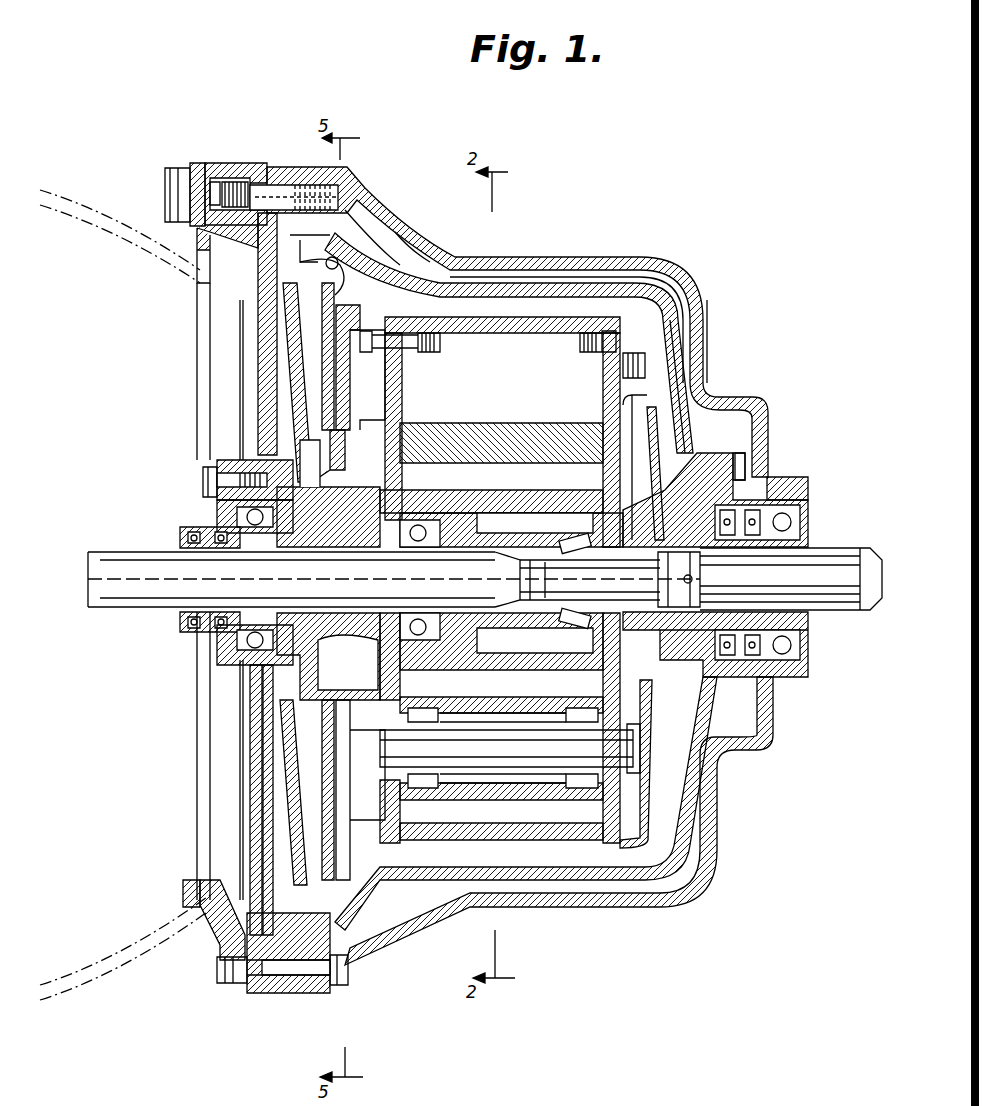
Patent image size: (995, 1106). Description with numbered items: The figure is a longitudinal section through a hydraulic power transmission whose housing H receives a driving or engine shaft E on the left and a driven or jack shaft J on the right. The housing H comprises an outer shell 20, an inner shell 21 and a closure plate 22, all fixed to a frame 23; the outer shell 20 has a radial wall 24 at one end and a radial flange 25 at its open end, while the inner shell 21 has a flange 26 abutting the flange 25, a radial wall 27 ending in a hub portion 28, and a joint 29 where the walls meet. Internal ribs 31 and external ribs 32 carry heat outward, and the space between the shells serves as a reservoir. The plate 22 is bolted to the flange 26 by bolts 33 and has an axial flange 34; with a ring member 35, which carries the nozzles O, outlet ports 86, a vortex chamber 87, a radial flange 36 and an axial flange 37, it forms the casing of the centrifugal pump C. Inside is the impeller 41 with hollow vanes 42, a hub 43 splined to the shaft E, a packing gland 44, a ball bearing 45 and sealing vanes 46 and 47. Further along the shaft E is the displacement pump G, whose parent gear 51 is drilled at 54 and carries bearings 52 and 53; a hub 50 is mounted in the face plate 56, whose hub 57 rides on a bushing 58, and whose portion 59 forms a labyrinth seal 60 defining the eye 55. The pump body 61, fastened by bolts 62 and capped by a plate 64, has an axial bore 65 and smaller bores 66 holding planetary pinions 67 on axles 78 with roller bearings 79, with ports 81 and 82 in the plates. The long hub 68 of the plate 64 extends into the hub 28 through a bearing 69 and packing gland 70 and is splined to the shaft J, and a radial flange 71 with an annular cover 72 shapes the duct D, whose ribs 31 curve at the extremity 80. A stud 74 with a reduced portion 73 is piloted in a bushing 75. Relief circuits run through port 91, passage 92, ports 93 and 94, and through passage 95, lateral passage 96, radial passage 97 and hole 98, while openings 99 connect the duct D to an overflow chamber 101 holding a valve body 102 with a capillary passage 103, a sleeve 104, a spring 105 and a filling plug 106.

The outer shell 20 is at (597, 256).
The inner shell 21 is at (627, 282).
The closure plate 22 is at (255, 345).
The frame 23 is at (197, 895).
The radial wall 24 is at (720, 352).
The radial flange 25 is at (345, 990).
The radial flange 26 is at (310, 995).
The radial wall 27 is at (688, 333).
The hub portion 28 is at (773, 693).
The joint of walls 29 is at (775, 712).
The internal ribs 31 is at (455, 302).
The external ribs 32 is at (497, 278).
The bolts 33 is at (285, 990).
The circular flange 34 is at (267, 282).
The ring member 35 is at (392, 228).
The radial flange 36 is at (357, 780).
The axial flange 37 is at (395, 935).
The centrifugal impeller 41 is at (283, 372).
The hollow arms or vanes 42 is at (316, 404).
The central hub 43 is at (247, 648).
The packing gland 44 is at (233, 632).
The ball bearing 45 is at (237, 520).
The ribs or vanes 46 is at (277, 393).
The ribs or vanes 47 is at (330, 393).
The hub portion 50 is at (370, 545).
The parent gear 51 is at (497, 503).
The bearing 52 is at (369, 684).
The roller bearing 53 is at (588, 543).
The drilling 54 is at (501, 641).
The eye 55 is at (253, 453).
The face plate 56 is at (405, 400).
The hub 57 is at (355, 645).
The bushing 58 is at (328, 678).
The laterally extending portion 59 is at (338, 456).
The labyrinth seal 60 is at (330, 710).
The cylindrical body 61 is at (517, 323).
The bolts 62 is at (437, 360).
The plate 64 is at (603, 400).
The axial bore 65 is at (540, 463).
The smaller bores 66 is at (575, 835).
The planetary pinion 67 is at (527, 800).
The long hub 68 is at (808, 624).
The bearing 69 is at (800, 648).
The packing gland 70 is at (803, 491).
The radial flange 71 is at (652, 450).
The annular cover 72 is at (645, 356).
The reduced portion 73 is at (577, 579).
The stud 74 is at (665, 578).
The bushing 75 is at (555, 618).
The axle 78 is at (505, 730).
The roller bearings 79 is at (428, 707).
The curved extremity 80 is at (345, 208).
The left hand ports 81 is at (392, 487).
The right hand ports 82 is at (616, 686).
The outlet ports 86 is at (405, 950).
The vortex chamber 87 is at (300, 300).
The port 91 is at (243, 930).
The radial passage 92 is at (260, 813).
The port 93 is at (273, 666).
The port 94 is at (295, 490).
The passage 95 is at (740, 463).
The lateral passage 96 is at (700, 522).
The radial passage 97 is at (660, 545).
The radial hole 98 is at (235, 564).
The aligned openings 99 is at (285, 233).
The overflow chamber 101 is at (217, 227).
The valve body 102 is at (280, 178).
The capillary passage 103 is at (247, 182).
The sleeve 104 is at (220, 178).
The spring 105 is at (203, 178).
The filling plug 106 is at (166, 188).
The centrifugal pump C is at (320, 757).
The fluid passage or duct D is at (515, 857).
The driving or engine shaft E is at (118, 548).
The displacement pump G is at (647, 773).
The casing or housing H is at (638, 228).
The driven or jack shaft J is at (858, 546).
The nozzles or orifices O is at (310, 895).